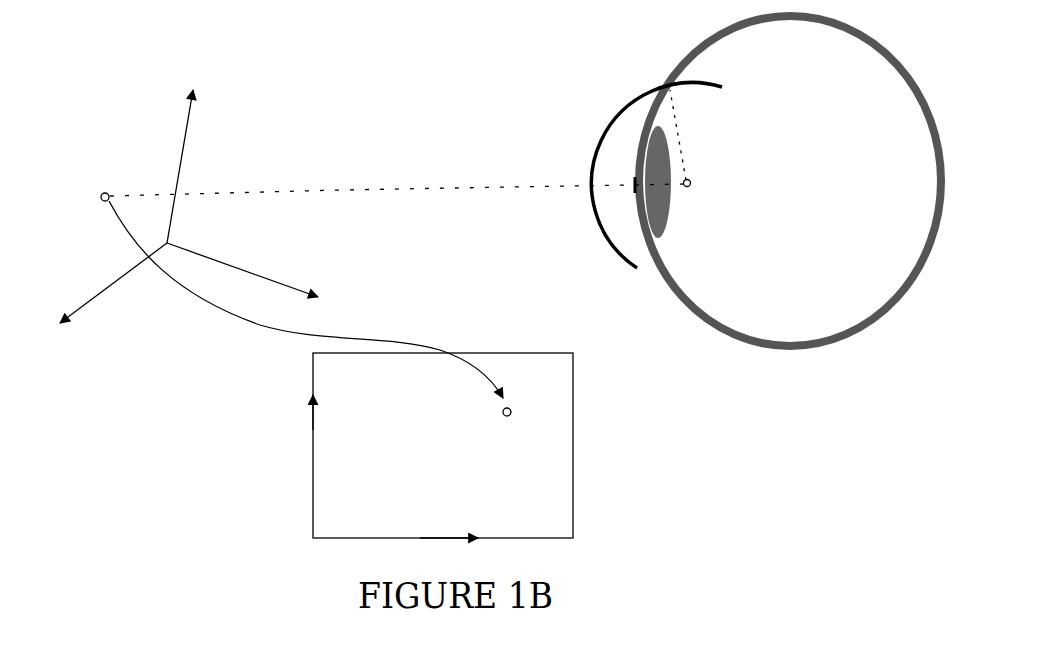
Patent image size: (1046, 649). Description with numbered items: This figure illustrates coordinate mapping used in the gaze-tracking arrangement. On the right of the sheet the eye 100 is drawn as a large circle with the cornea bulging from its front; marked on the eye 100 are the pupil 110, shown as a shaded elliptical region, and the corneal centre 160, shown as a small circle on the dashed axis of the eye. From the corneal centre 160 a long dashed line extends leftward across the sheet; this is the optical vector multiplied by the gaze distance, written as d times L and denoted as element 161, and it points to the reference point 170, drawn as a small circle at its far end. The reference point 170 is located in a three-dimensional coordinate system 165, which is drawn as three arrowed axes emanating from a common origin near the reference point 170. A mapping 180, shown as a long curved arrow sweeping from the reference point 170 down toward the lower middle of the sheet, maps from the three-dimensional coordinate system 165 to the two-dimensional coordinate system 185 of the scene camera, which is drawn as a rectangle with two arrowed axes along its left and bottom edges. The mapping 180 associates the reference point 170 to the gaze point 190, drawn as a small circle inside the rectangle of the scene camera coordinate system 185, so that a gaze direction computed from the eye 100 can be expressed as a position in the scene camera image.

The eye 100 is at (723, 340).
The pupil 110 is at (660, 193).
The corneal centre 160 is at (690, 186).
The optical vector multiplied by gaze distance 161 is at (410, 190).
The three-dimensional coordinate system 165 is at (230, 263).
The reference point 170 is at (107, 192).
The mapping 180 is at (262, 326).
The two-dimensional coordinate system of the scene camera 185 is at (313, 505).
The gaze point 190 is at (505, 417).